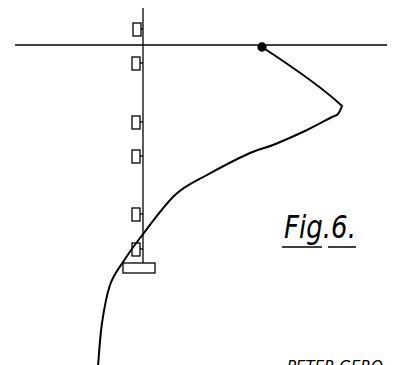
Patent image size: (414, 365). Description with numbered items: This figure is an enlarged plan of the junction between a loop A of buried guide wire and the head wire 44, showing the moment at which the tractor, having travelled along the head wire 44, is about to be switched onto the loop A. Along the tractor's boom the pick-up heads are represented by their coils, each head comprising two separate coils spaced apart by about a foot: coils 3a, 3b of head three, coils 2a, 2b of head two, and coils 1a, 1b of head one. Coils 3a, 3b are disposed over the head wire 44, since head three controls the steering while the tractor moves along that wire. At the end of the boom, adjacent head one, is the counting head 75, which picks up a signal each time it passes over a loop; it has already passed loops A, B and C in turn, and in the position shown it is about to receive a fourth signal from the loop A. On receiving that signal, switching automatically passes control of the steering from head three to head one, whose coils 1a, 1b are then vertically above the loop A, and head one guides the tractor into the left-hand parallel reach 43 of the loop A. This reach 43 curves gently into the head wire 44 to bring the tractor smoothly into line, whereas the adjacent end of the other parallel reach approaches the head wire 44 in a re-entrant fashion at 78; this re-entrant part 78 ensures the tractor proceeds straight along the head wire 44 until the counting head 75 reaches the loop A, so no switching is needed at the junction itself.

The head wire 44 is at (40, 43).
The counting head 75 is at (155, 268).
The coil 3b is at (133, 29).
The coil 3a is at (132, 63).
The coil 2b is at (132, 122).
The coil 2a is at (132, 156).
The coil 1b is at (132, 215).
The coil 1a is at (132, 250).
The re-entrant part 78 is at (333, 92).
The loop A is at (261, 147).
The parallel reach 43 is at (101, 340).